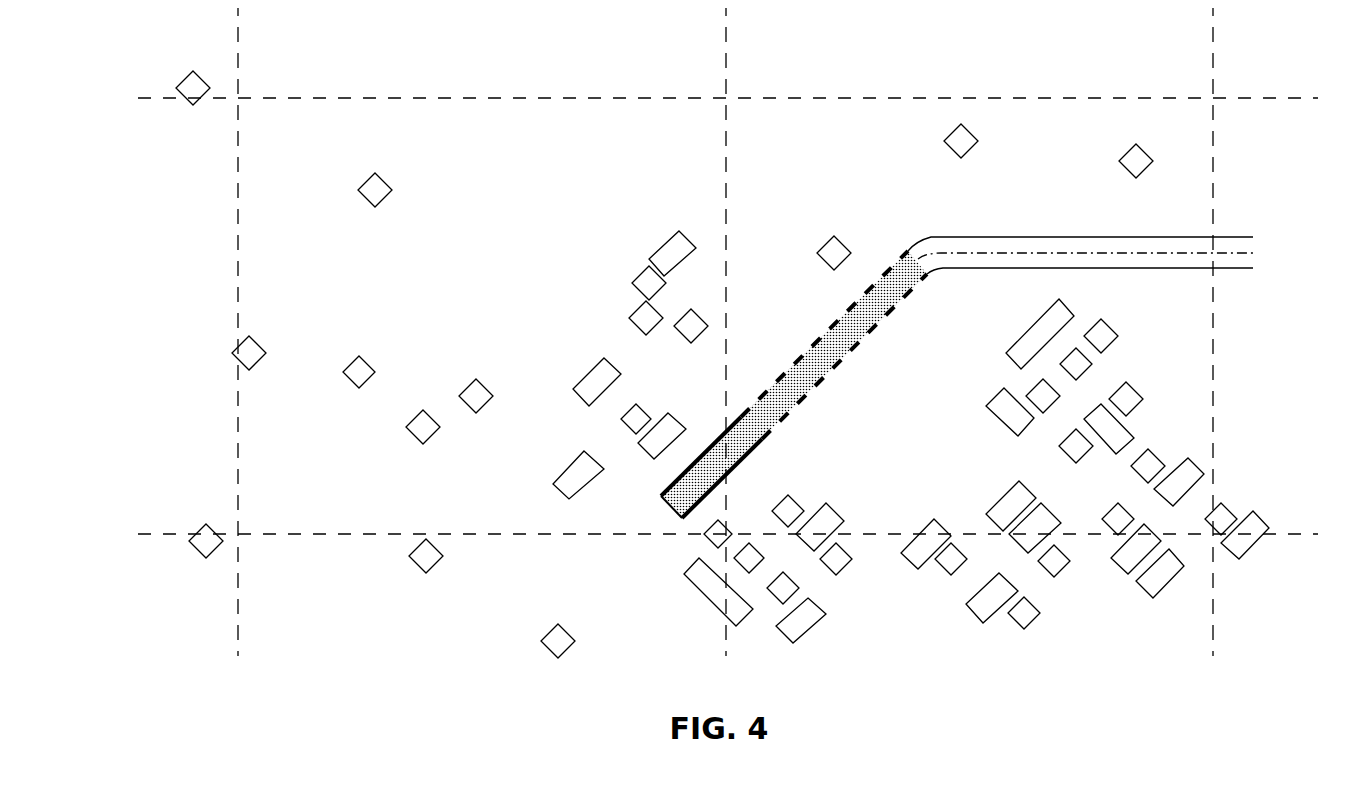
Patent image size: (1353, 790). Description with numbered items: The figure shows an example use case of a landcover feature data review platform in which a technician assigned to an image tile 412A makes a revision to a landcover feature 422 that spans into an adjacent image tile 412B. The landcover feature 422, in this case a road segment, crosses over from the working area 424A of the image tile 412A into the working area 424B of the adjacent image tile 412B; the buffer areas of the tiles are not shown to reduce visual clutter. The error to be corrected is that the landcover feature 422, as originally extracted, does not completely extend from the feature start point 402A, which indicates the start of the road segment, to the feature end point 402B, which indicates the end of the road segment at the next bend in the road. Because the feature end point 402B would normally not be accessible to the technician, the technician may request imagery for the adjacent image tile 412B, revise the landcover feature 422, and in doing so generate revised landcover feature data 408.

The image tile 412A is at (728, 332).
The adjacent image tile 412B is at (728, 332).
The landcover feature 422 is at (750, 367).
The working area 424A is at (514, 364).
The working area 424B is at (1085, 376).
The feature start point 402A is at (646, 510).
The feature end point 402B is at (952, 212).
The revised landcover feature data 408 is at (884, 352).